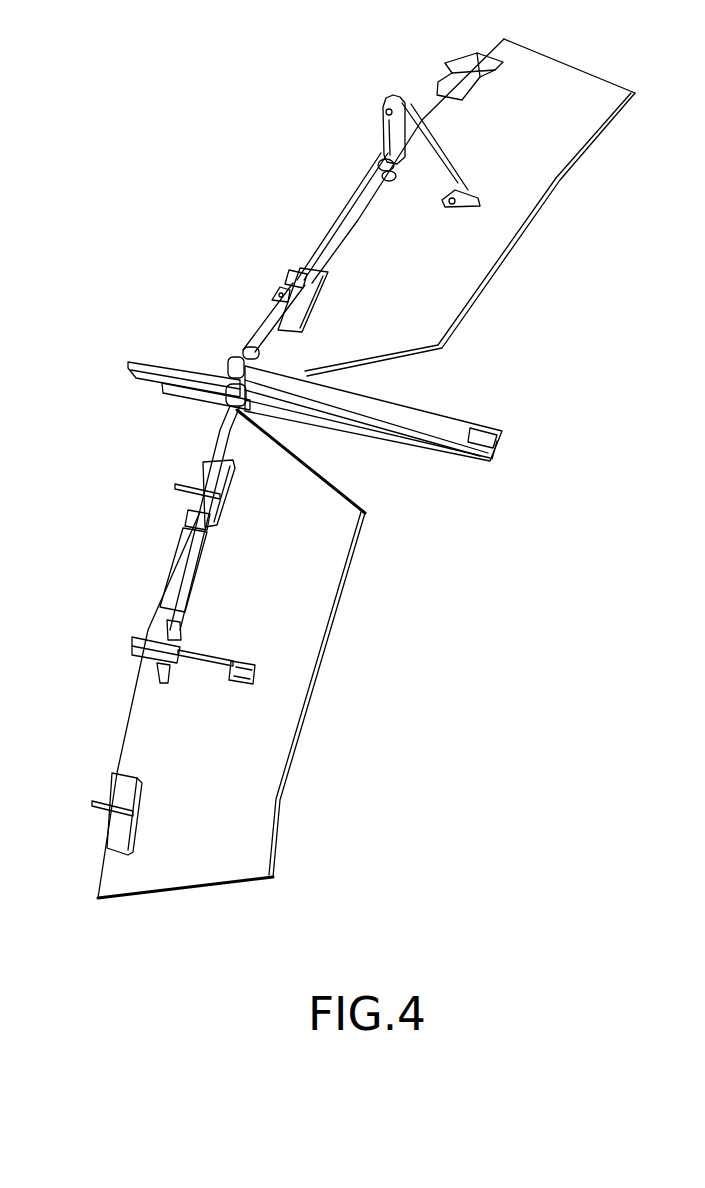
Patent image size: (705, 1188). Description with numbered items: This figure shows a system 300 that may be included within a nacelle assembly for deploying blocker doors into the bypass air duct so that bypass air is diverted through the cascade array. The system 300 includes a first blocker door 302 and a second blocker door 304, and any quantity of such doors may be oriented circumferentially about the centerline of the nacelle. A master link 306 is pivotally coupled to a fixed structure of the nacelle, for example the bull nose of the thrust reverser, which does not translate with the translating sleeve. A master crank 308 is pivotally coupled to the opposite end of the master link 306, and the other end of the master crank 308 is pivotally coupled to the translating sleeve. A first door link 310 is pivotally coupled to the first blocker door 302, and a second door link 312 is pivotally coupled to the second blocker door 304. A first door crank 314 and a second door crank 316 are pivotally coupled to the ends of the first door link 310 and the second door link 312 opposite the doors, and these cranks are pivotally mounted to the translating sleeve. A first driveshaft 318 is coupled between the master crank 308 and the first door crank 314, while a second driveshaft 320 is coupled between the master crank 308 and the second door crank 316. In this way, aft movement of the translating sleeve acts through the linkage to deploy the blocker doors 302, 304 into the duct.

The system 300 is at (138, 100).
The first blocker door 302 is at (465, 281).
The second blocker door 304 is at (282, 714).
The master link 306 is at (175, 397).
The master crank 308 is at (436, 424).
The first door link 310 is at (463, 181).
The second door link 312 is at (207, 664).
The first door crank 314 is at (383, 133).
The second door crank 316 is at (133, 652).
The first driveshaft 318 is at (297, 275).
The second driveshaft 320 is at (190, 577).